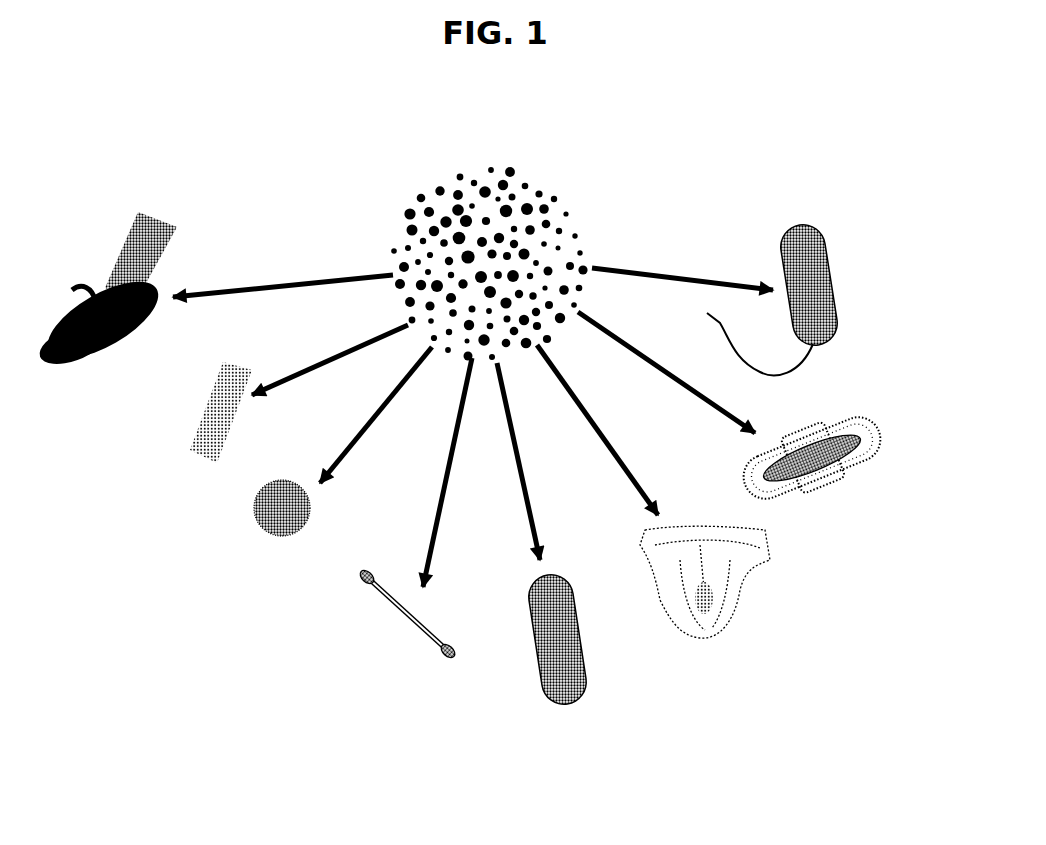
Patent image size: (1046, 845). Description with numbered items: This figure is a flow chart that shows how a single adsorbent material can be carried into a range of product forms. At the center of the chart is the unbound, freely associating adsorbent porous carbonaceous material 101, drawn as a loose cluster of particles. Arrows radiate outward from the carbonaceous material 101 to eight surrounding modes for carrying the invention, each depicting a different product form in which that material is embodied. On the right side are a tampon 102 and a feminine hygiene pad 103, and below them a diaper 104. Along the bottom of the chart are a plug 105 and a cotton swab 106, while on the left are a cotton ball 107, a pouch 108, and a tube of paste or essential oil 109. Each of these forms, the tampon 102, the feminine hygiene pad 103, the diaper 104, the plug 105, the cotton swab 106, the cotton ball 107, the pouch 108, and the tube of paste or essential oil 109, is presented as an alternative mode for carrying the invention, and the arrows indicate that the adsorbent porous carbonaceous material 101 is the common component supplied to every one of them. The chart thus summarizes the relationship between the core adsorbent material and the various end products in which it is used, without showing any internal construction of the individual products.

The adsorbent porous carbonaceous material 101 is at (476, 168).
The tampon 102 is at (838, 292).
The feminine hygiene pad 103 is at (855, 480).
The diaper 104 is at (762, 588).
The plug 105 is at (597, 683).
The cotton swab 106 is at (403, 628).
The cotton ball 107 is at (262, 550).
The pouch 108 is at (183, 425).
The tube of paste, essential oil 109 is at (115, 262).